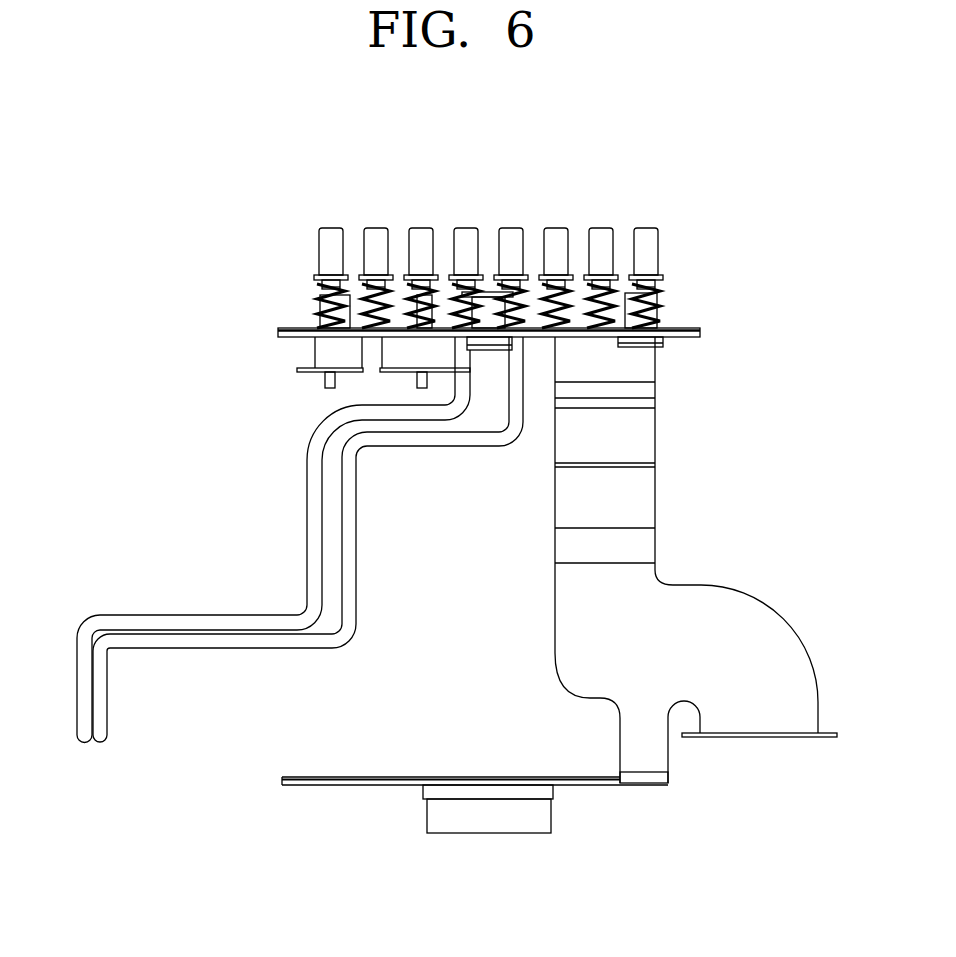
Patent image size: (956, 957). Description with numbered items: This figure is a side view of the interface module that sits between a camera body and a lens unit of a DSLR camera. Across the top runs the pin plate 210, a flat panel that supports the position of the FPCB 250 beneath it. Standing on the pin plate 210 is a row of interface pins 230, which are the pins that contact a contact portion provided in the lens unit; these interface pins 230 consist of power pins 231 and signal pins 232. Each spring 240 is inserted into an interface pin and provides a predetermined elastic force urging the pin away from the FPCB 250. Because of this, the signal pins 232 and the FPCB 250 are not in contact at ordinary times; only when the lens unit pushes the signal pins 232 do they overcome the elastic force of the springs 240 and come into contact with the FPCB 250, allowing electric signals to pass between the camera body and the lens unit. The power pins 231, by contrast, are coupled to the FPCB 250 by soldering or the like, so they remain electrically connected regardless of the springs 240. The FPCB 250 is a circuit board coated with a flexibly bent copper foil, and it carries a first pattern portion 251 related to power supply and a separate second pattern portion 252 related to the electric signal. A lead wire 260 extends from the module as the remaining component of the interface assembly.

The pin plate 210 is at (278, 333).
The interface pins 230 is at (370, 148).
The power pins 231 is at (421, 228).
The signal pins 232 is at (646, 228).
The spring 240 is at (318, 305).
The FPCB 250 is at (672, 455).
The first pattern portion 251 is at (413, 360).
The second pattern portion 252 is at (628, 510).
The lead wire 260 is at (177, 636).